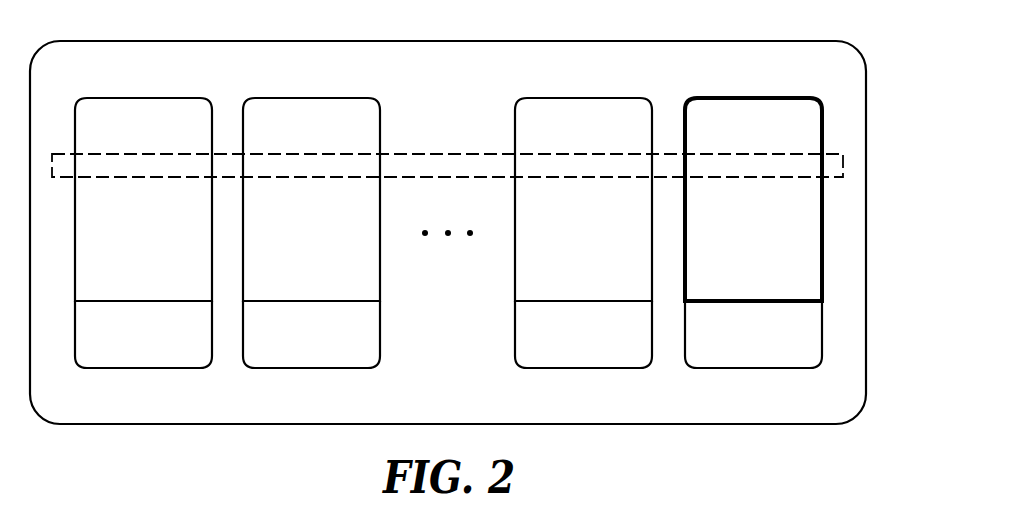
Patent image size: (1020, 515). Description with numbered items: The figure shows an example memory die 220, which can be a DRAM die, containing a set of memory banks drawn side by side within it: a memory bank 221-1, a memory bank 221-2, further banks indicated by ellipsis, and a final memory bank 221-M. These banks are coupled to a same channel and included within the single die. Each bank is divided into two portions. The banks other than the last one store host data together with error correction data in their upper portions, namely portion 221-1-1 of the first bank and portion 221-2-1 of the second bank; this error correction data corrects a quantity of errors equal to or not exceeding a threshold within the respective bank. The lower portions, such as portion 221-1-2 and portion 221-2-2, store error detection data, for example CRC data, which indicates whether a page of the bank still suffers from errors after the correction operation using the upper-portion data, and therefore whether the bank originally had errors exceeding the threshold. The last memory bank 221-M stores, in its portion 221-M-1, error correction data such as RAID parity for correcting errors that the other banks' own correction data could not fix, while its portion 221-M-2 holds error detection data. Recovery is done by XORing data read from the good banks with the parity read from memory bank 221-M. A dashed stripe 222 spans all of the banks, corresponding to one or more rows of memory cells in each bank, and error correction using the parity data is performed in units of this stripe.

The memory die 220 is at (200, 47).
The memory bank 221-1 is at (143, 215).
The memory bank 221-2 is at (312, 215).
The memory bank 221-M is at (756, 215).
The portion 221-1-1 is at (177, 233).
The portion 221-1-2 is at (177, 345).
The portion 221-2-1 is at (345, 233).
The portion 221-2-2 is at (345, 345).
The portion 221-M-1 is at (788, 233).
The portion 221-M-2 is at (788, 345).
The stripe 222 is at (838, 166).